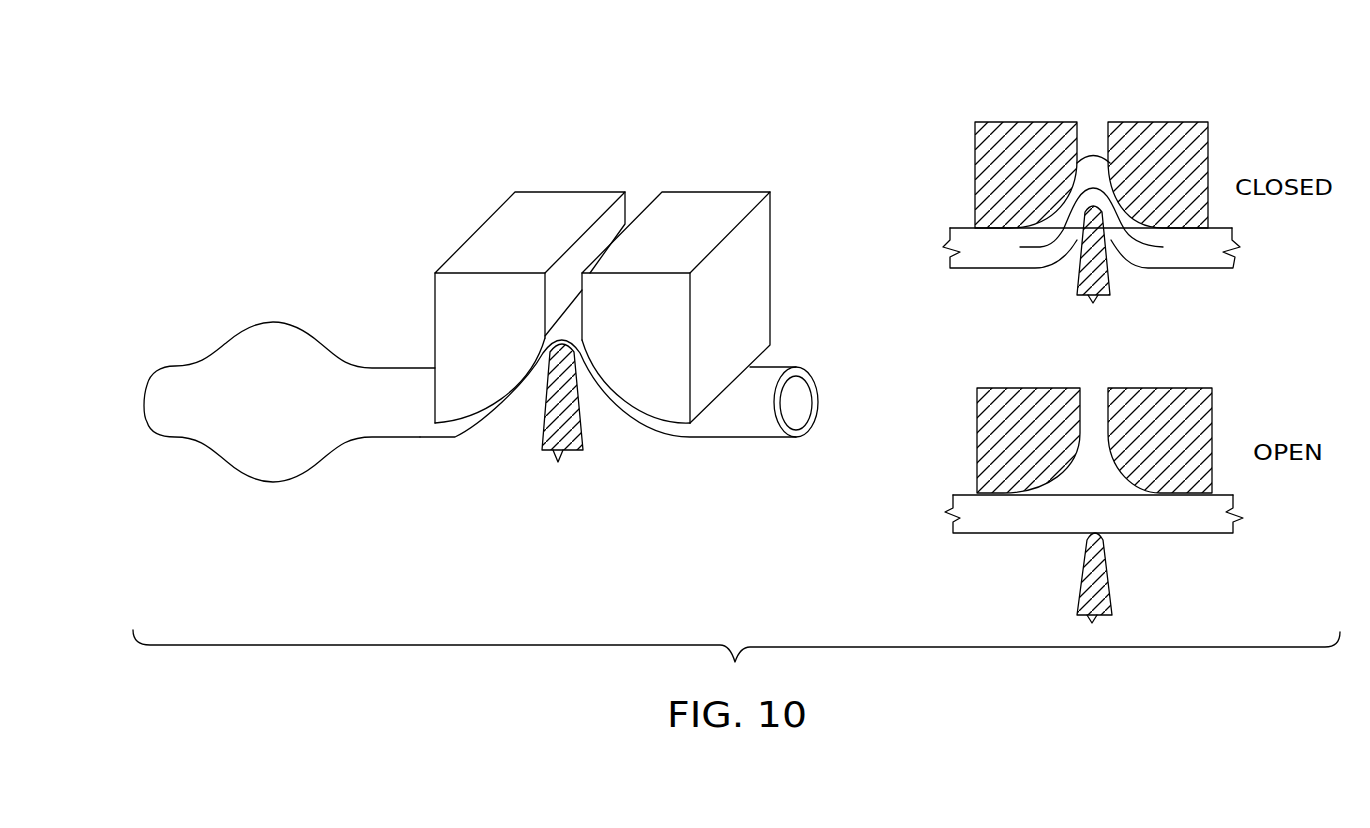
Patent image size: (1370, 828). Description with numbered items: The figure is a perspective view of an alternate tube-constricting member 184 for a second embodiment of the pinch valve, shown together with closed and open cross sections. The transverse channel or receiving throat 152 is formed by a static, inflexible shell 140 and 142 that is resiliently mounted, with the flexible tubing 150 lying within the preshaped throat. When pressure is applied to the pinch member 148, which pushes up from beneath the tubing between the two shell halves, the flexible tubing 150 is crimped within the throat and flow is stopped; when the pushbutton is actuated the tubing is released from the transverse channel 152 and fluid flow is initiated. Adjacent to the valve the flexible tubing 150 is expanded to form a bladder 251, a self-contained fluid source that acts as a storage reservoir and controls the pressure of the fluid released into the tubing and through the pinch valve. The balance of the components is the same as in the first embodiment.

The static inflexible shell 140 is at (502, 354).
The static inflexible shell 142 is at (659, 345).
The pinch member 148 is at (540, 425).
The flexible tubing 150 is at (760, 388).
The transverse channel or receiving throat 152 is at (638, 198).
The tube-constricting member 184 is at (458, 214).
The bladder 251 is at (263, 323).